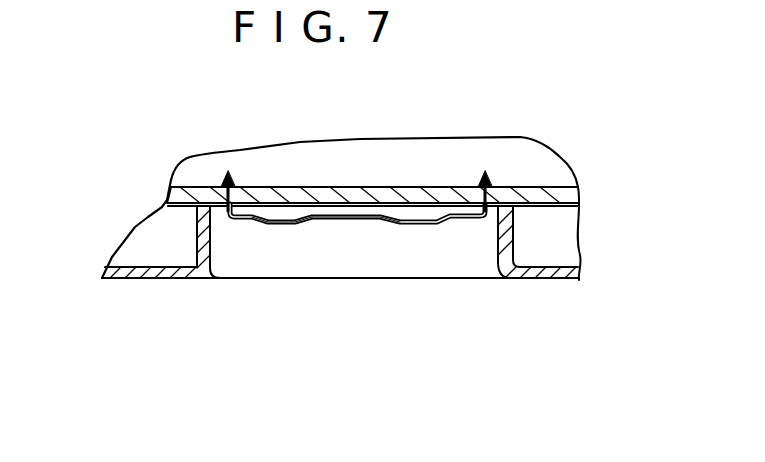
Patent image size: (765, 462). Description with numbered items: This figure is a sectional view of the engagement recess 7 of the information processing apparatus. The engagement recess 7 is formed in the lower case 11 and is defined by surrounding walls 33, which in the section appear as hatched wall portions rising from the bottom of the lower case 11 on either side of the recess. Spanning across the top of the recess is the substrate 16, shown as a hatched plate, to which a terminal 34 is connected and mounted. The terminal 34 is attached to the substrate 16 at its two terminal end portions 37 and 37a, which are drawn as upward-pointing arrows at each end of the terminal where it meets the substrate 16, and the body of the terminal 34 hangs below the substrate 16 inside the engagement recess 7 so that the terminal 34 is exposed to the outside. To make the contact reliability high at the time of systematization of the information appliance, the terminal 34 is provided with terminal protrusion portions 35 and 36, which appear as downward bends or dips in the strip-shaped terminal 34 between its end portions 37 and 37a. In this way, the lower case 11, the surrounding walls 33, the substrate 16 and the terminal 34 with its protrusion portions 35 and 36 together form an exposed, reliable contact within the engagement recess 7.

The engagement recess 7 is at (243, 264).
The lower case 11 is at (155, 278).
The substrate 16 is at (413, 187).
The surrounding walls 33 is at (513, 233).
The terminal 34 is at (367, 224).
The terminal protrusion portion 35 is at (284, 224).
The terminal protrusion portion 36 is at (427, 224).
The terminal end portion 37 is at (228, 170).
The terminal end portion 37a is at (487, 170).